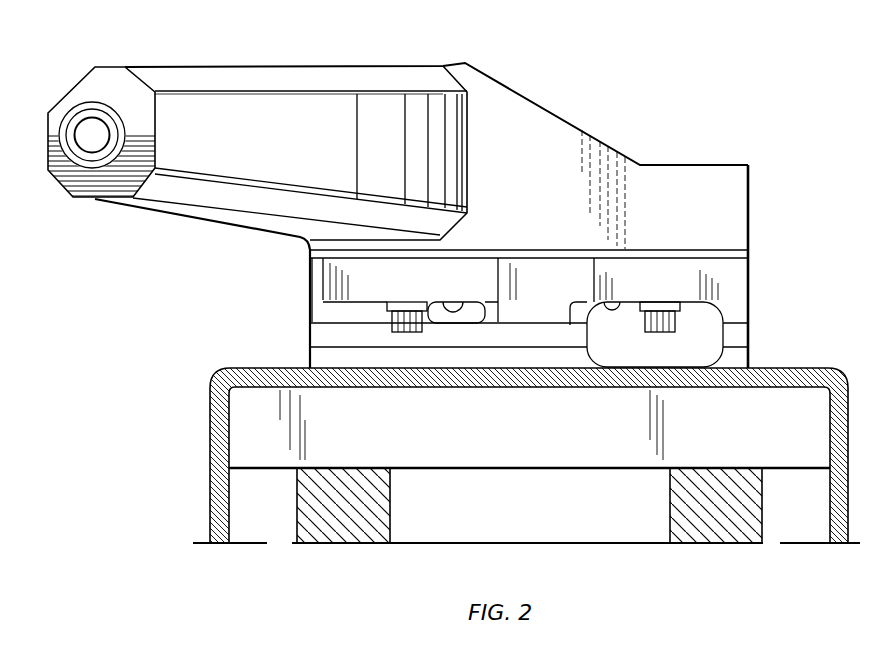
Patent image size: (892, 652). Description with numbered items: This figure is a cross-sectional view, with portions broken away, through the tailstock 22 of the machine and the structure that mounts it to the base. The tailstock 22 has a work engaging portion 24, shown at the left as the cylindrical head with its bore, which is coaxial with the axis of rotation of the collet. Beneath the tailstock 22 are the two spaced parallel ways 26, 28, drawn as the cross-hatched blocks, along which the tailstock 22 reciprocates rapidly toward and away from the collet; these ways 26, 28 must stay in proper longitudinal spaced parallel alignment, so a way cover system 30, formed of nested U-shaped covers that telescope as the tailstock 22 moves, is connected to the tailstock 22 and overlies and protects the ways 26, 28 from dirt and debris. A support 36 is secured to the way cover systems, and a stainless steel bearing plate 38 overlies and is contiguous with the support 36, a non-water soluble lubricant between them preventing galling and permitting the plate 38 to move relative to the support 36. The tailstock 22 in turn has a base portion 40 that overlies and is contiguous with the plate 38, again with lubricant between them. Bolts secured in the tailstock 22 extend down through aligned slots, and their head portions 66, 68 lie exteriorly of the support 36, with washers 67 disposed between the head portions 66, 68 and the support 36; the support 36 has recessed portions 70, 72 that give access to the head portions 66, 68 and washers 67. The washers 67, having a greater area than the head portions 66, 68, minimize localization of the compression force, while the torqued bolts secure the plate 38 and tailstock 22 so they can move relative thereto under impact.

The tailstock 22 is at (561, 83).
The work engaging portion 24 is at (80, 130).
The way 26 is at (372, 513).
The way 28 is at (738, 514).
The way cover system 30 is at (796, 342).
The support 36 is at (750, 268).
The bearing plate 38 is at (725, 250).
The base portion 40 is at (693, 176).
The head portion 66 is at (395, 333).
The washer 67 is at (410, 302).
The head portion 68 is at (683, 333).
The recessed portion 70 is at (450, 301).
The recessed portion 72 is at (616, 300).